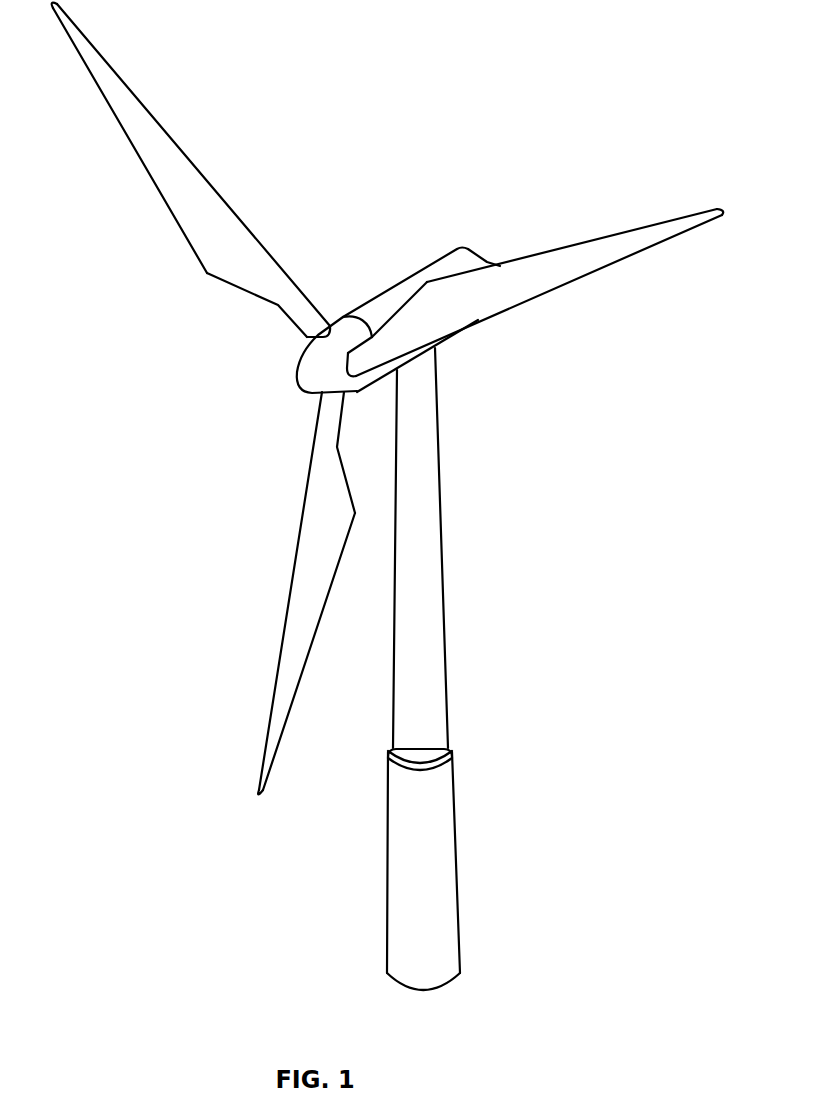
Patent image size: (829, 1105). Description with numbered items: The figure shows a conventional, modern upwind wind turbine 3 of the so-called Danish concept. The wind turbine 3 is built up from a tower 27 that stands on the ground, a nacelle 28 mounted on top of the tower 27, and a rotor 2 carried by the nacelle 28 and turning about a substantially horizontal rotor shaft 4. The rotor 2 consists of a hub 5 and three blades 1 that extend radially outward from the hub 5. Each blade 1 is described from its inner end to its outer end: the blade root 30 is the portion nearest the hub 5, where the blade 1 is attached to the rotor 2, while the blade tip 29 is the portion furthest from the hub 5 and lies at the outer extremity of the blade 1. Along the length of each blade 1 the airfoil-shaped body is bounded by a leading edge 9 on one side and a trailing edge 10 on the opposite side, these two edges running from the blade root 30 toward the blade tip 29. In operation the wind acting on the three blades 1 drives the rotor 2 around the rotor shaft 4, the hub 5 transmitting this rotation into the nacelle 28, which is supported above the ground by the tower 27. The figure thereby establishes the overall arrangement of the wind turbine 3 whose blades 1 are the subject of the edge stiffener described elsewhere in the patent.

The blade 1 is at (211, 251).
The rotor 2 is at (246, 248).
The wind turbine 3 is at (478, 511).
The rotor shaft 4 is at (316, 359).
The hub 5 is at (305, 377).
The leading edge 9 is at (179, 148).
The trailing edge 10 is at (138, 142).
The tower 27 is at (443, 457).
The nacelle 28 is at (374, 306).
The blade tip 29 is at (87, 56).
The blade root 30 is at (313, 345).